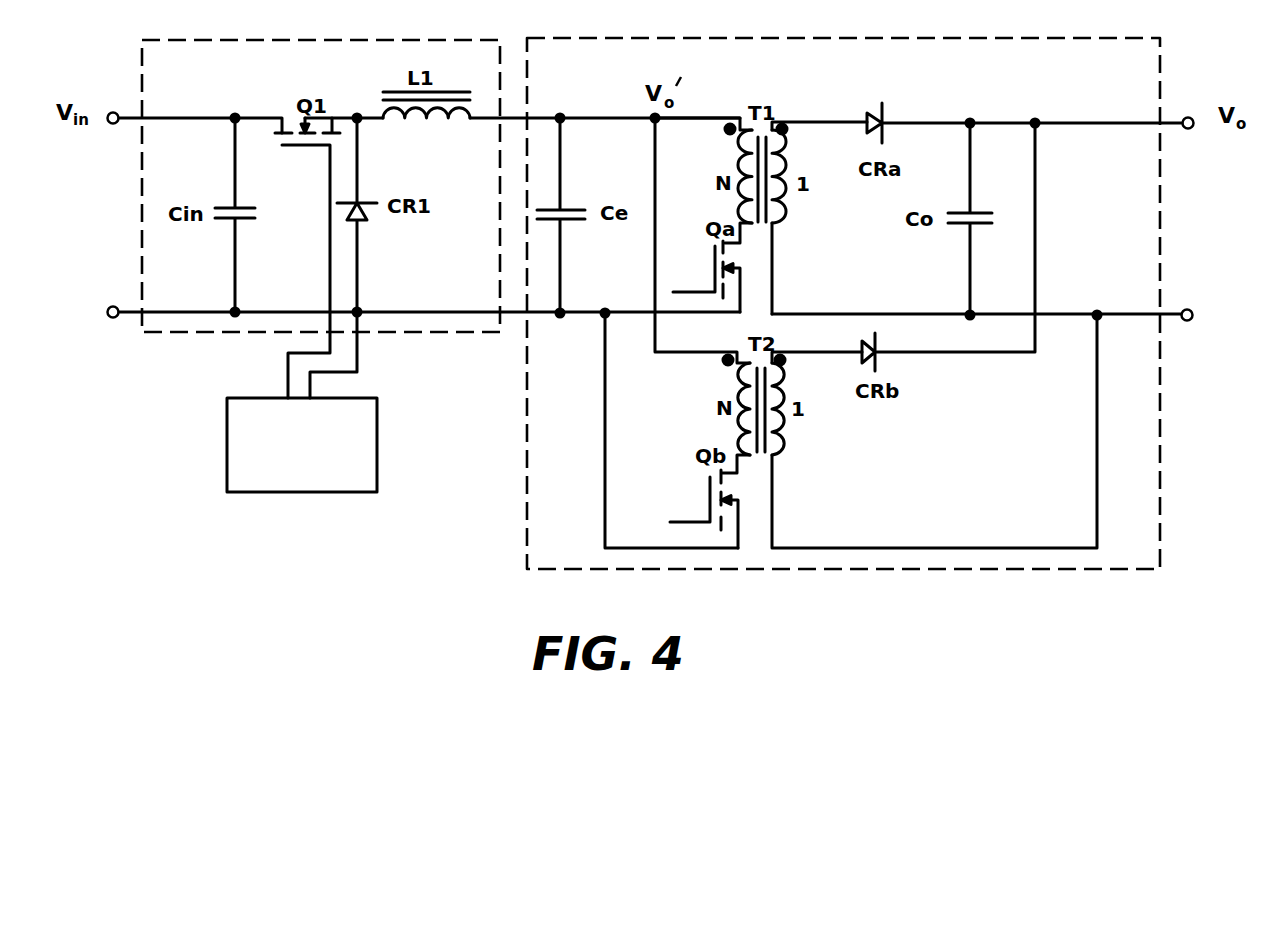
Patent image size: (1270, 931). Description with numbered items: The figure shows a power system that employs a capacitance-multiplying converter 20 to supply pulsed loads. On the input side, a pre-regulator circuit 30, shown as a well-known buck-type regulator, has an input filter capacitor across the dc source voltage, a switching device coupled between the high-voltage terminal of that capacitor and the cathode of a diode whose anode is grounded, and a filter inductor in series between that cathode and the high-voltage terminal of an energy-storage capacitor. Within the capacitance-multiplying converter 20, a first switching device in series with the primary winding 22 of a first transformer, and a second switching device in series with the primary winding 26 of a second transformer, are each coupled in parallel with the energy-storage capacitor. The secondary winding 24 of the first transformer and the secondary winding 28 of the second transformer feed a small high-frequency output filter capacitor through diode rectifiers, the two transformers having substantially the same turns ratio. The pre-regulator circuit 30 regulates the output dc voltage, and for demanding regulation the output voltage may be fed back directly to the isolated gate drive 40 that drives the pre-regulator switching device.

The capacitance-multiplying converter 20 is at (843, 334).
The primary winding of first transformer T1 22 is at (743, 157).
The secondary winding of transformer T1 24 is at (783, 203).
The primary winding of second transformer T2 26 is at (743, 383).
The secondary winding of transformer T2 28 is at (787, 420).
The pre-regulator circuit 30 is at (423, 332).
The gate drive 40 is at (332, 492).